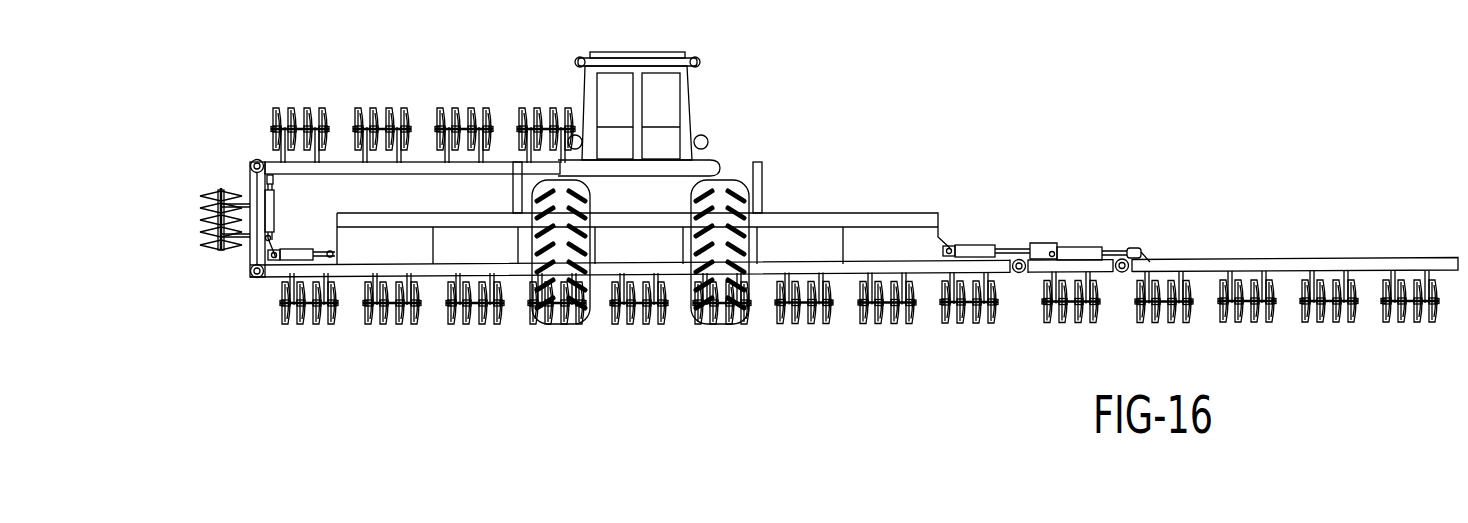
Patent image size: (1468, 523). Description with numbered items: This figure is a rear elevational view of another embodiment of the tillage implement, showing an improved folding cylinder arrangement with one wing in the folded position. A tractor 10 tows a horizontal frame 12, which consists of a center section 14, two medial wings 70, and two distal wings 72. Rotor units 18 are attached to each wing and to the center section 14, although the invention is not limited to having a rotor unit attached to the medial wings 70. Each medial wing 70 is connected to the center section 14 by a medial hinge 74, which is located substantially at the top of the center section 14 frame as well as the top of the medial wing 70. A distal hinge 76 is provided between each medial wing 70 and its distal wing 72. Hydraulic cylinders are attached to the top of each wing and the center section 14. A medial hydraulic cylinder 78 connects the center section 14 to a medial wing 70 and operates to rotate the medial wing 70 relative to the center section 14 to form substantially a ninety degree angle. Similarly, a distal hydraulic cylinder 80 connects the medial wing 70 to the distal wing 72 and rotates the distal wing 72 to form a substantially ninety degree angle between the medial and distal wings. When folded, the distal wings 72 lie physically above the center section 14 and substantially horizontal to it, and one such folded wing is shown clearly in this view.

The tractor 10 is at (693, 110).
The horizontal frame 12 is at (826, 198).
The center section 14 is at (606, 376).
The rotor units 18 is at (200, 215).
The medial wings 70 is at (260, 238).
The distal wings 72 is at (342, 165).
The medial hinge 74 is at (255, 277).
The distal hinge 76 is at (250, 163).
The medial hydraulic cylinder 78 is at (970, 245).
The distal hydraulic cylinder 80 is at (272, 205).